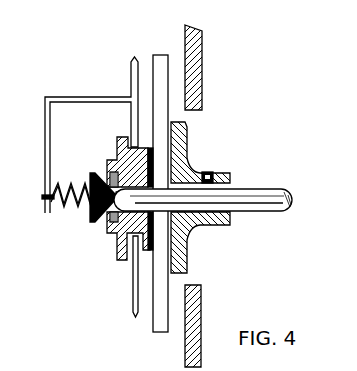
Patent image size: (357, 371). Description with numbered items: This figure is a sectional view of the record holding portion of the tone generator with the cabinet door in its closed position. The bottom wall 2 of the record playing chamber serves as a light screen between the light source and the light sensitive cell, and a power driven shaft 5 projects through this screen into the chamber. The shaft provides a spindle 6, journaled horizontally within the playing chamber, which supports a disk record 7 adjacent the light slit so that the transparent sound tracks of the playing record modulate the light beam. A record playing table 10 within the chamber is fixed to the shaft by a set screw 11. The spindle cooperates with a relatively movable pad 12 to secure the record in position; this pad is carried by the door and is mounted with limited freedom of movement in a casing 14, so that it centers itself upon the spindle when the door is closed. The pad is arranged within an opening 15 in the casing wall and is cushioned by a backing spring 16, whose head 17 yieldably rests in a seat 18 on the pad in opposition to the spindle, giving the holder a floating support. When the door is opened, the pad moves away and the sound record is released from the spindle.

The bottom wall 2 is at (202, 303).
The power driven shaft 5 is at (251, 191).
The spindle 6 is at (110, 221).
The disk record 7 is at (162, 55).
The record playing table 10 is at (181, 152).
The set screw 11 is at (209, 173).
The pad 12 is at (144, 249).
The casing 14 is at (80, 97).
The opening 15 is at (133, 146).
The backing spring 16 is at (47, 212).
The head 17 is at (95, 176).
The seat 18 is at (92, 220).